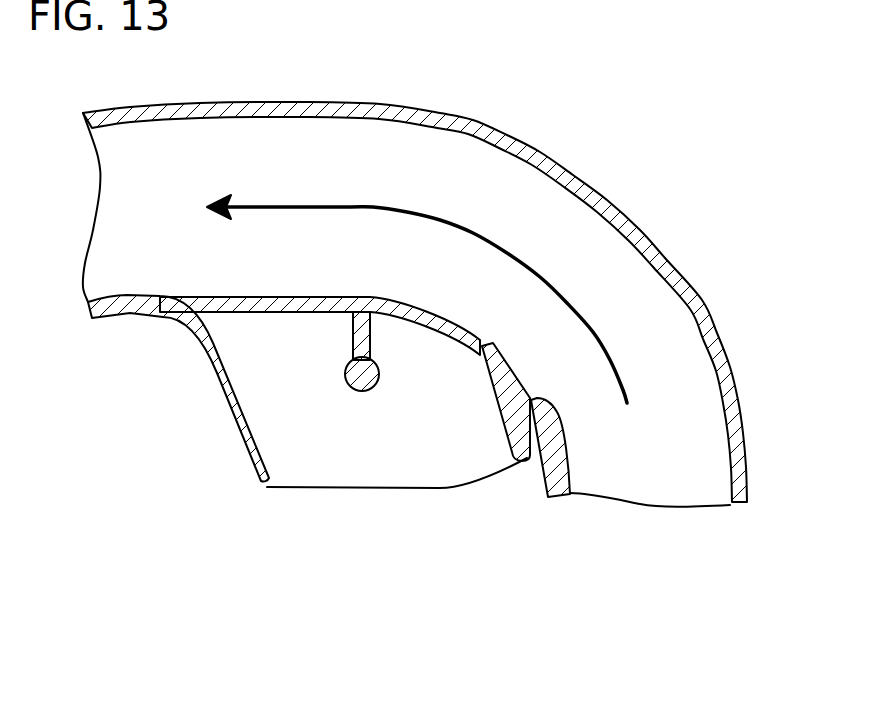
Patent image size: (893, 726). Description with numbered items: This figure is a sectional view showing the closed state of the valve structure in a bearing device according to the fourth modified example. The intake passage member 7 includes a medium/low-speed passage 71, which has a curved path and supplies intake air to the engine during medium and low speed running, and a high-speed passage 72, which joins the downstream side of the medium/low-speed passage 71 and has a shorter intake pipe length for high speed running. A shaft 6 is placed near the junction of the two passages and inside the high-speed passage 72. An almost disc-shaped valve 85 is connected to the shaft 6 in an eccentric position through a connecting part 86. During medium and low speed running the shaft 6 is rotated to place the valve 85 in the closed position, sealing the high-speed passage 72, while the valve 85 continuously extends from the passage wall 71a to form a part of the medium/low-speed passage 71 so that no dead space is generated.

The intake passage member 7 is at (647, 222).
The medium/low-speed passage 71 is at (668, 436).
The passage wall 71a is at (553, 395).
The high-speed passage 72 is at (410, 450).
The valve 85 is at (290, 312).
The connecting part 86 is at (370, 335).
The shaft 6 is at (363, 392).